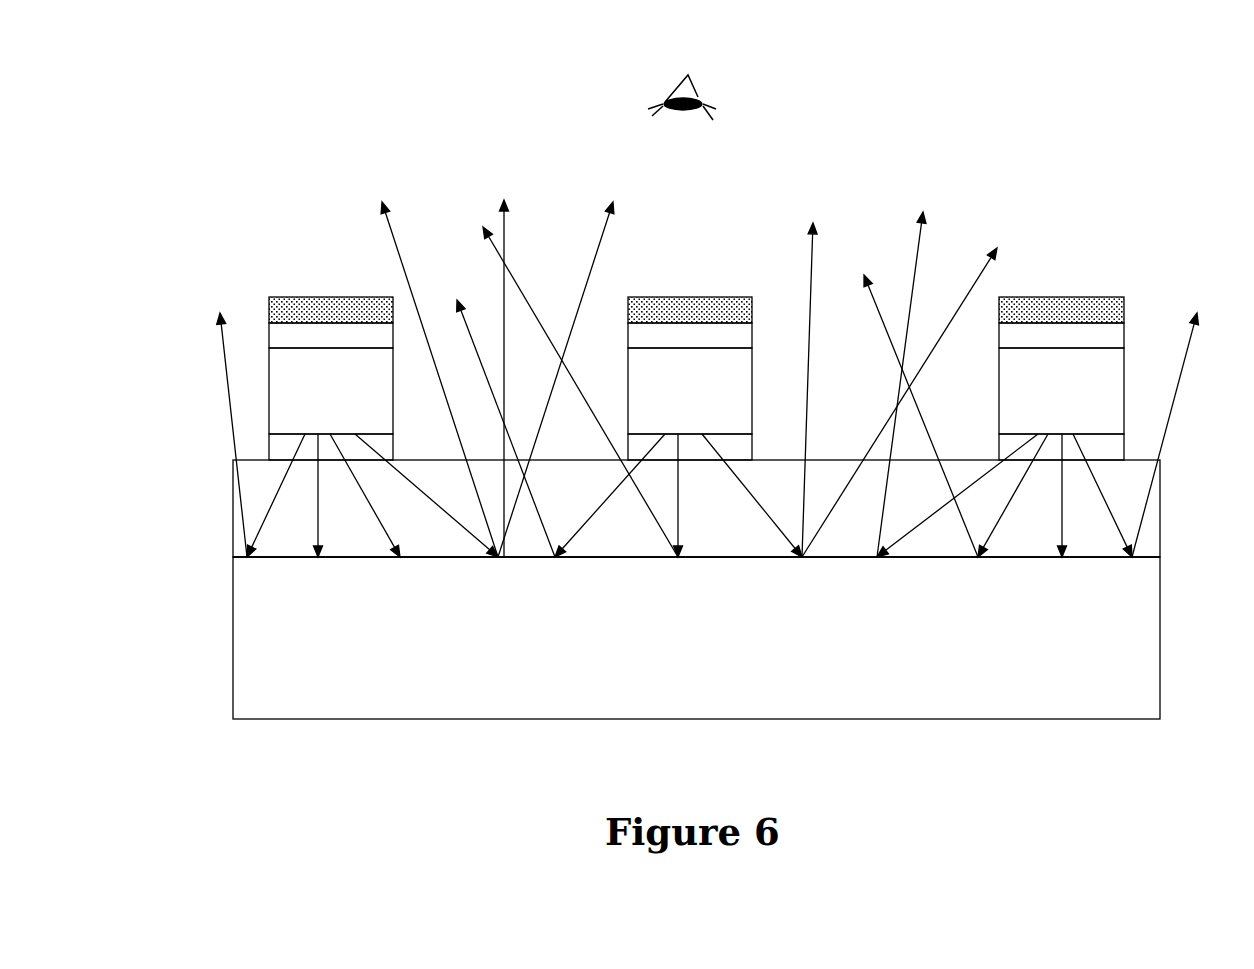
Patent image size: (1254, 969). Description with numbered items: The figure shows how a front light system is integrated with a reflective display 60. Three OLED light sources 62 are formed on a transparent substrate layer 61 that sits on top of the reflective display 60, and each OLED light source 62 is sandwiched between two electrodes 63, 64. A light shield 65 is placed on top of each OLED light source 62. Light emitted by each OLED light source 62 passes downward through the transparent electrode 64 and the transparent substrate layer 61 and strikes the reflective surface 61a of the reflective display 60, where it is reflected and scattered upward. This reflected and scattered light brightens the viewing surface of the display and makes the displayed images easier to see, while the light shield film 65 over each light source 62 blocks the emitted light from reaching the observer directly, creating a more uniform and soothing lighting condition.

The reflective display 60 is at (256, 644).
The transparent substrate layer 61 is at (244, 509).
The reflective surface 61a is at (355, 570).
The OLED light source 62 is at (292, 399).
The electrode 63 is at (1110, 324).
The transparent electrode 64 is at (1113, 439).
The light shield 65 is at (293, 304).